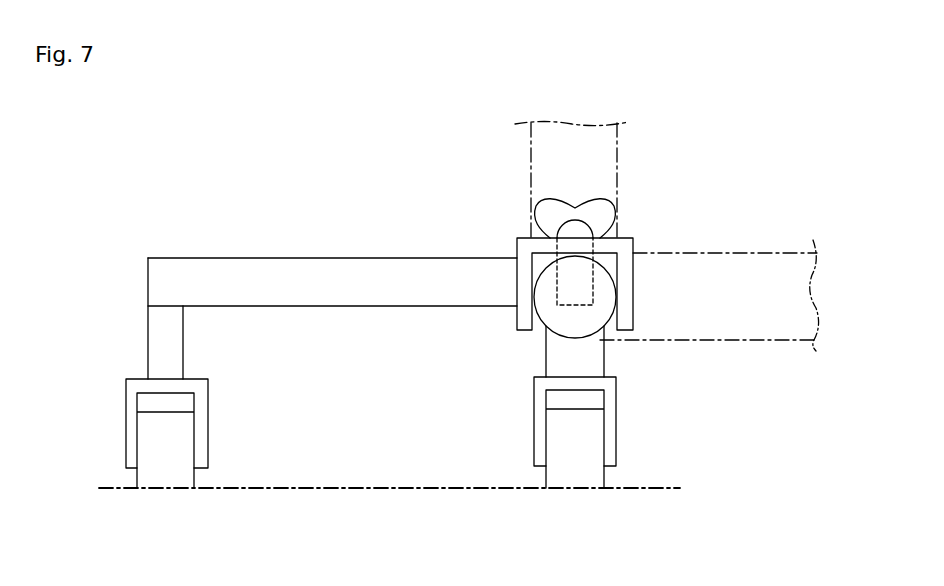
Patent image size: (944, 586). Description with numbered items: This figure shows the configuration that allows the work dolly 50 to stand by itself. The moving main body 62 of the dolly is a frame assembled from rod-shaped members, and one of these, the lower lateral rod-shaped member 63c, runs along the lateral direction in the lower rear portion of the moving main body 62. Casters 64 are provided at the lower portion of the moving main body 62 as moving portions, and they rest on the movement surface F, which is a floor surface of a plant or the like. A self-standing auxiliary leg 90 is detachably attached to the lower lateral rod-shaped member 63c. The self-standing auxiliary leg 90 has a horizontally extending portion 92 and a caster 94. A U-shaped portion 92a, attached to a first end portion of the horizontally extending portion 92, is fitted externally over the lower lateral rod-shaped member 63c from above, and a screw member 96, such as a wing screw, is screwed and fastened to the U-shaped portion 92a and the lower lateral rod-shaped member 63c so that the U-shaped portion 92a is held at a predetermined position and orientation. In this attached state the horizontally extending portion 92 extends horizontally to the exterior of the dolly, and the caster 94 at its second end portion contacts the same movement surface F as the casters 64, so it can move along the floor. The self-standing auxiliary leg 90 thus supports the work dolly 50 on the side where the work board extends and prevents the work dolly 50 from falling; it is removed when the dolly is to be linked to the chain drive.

The work dolly 50 is at (528, 214).
The moving main body 62 is at (720, 341).
The lower lateral rod-shaped member 63c is at (540, 333).
The caster 64 is at (616, 470).
The self-standing auxiliary leg 90 is at (332, 274).
The horizontally extending portion 92 is at (366, 307).
The U-shaped portion 92a is at (633, 275).
The caster 94 is at (208, 428).
The screw member 96 is at (591, 198).
The movement surface F is at (405, 486).